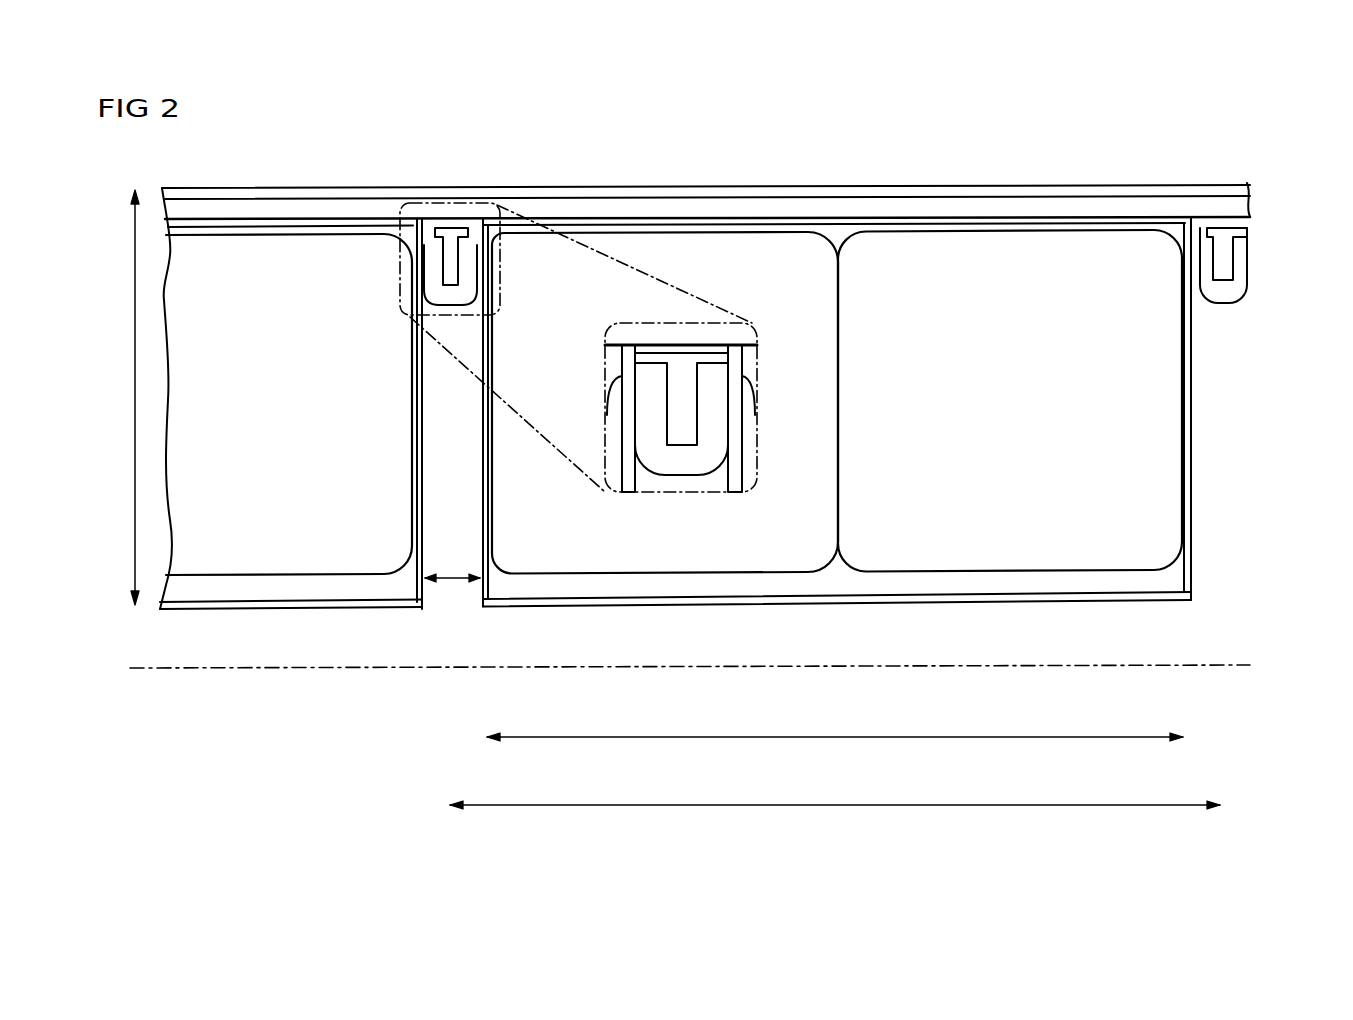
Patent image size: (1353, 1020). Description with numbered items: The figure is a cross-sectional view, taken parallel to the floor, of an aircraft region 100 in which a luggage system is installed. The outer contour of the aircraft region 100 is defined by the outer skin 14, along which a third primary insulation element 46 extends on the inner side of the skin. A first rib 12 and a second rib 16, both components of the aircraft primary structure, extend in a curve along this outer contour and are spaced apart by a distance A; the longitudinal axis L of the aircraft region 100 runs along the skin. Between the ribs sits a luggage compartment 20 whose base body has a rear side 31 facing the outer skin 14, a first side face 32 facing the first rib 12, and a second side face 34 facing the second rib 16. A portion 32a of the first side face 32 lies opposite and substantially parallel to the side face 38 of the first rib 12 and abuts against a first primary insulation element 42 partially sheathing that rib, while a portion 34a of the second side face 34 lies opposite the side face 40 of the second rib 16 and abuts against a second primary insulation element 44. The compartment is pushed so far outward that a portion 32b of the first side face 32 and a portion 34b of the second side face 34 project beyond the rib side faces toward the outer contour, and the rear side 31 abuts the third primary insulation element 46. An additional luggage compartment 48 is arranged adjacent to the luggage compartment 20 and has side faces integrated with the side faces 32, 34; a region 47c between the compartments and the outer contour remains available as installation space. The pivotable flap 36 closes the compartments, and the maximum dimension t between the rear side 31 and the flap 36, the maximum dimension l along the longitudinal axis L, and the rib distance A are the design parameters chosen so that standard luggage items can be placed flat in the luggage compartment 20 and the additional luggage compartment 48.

The aircraft region 100 is at (835, 107).
The outer skin 14 is at (517, 186).
The rear side 31 is at (689, 210).
The third primary insulation element 46 is at (922, 205).
The pivotable flap 36 is at (887, 598).
The luggage compartment 20 is at (272, 588).
The additional luggage compartment 48 is at (658, 557).
The portion of the second side face 34b is at (470, 203).
The second rib 16 is at (447, 270).
The second primary insulation element 44 is at (430, 240).
The side face of the second rib 40 is at (480, 252).
The portion of the second side face 34a is at (478, 272).
The region 47c is at (435, 418).
The second side face 34 is at (478, 440).
The first rib 12 is at (1228, 240).
The portion of the first side face 32a is at (1232, 274).
The portion of the first side face 32b is at (1196, 220).
The first primary insulation element 42 is at (1202, 262).
The side face of the first rib 38 is at (1210, 273).
The first side face 32 is at (1193, 410).
The maximum dimension t is at (128, 400).
The longitudinal axis L is at (385, 667).
The maximum dimension l is at (835, 732).
The distance A is at (835, 800).